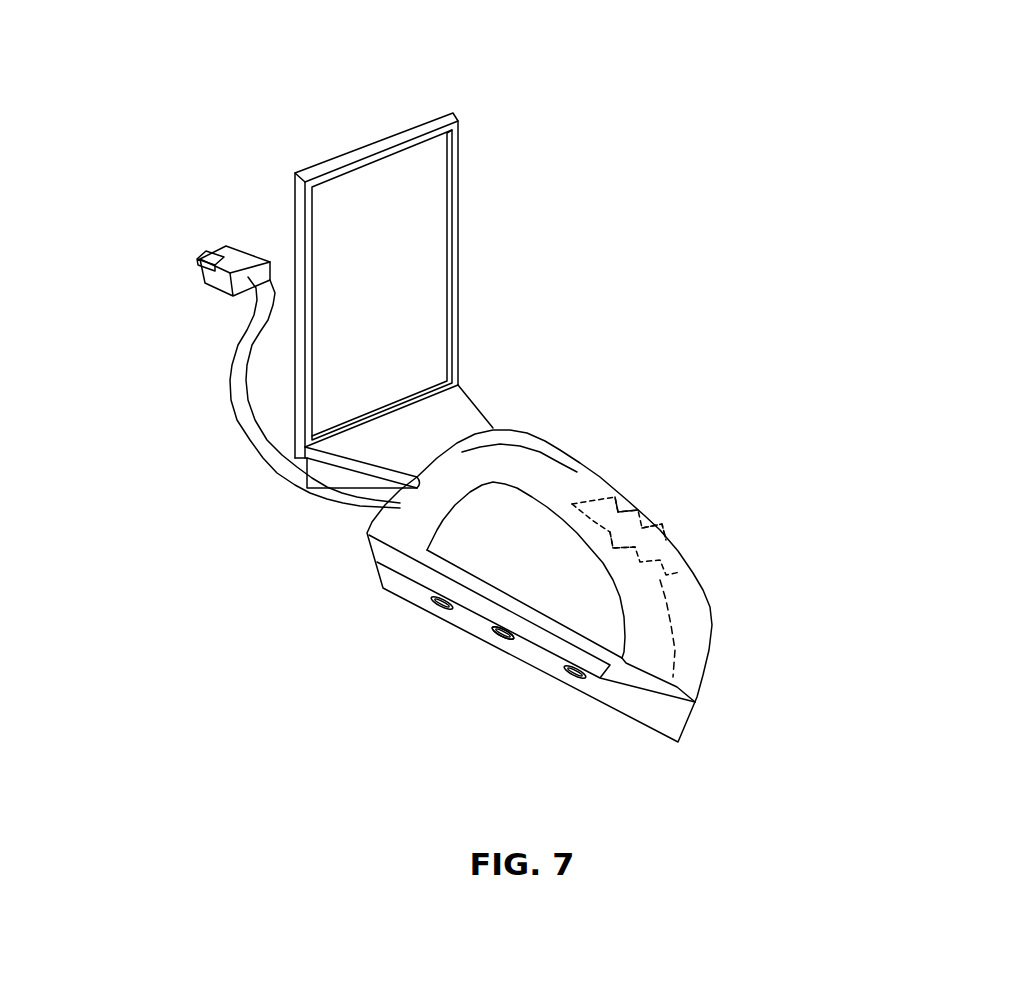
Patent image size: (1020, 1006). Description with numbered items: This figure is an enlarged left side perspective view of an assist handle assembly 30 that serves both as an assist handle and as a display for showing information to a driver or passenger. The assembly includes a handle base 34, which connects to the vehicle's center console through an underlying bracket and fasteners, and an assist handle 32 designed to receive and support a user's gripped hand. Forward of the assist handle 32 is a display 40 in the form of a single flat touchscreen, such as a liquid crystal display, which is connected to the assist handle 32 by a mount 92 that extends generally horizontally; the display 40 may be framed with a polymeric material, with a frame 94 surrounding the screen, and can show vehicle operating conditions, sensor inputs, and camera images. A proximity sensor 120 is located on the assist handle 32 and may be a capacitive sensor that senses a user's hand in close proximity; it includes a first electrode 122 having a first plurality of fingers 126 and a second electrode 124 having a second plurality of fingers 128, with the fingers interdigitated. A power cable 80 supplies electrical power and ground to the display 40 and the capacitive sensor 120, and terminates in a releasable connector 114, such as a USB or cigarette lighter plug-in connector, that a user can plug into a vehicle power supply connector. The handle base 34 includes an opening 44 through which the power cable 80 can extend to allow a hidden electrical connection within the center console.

The assist handle assembly 30 is at (543, 566).
The assist handle 32 is at (542, 433).
The handle base 34 is at (434, 608).
The display 40 is at (444, 244).
The opening 44 is at (500, 640).
The power cable 80 is at (241, 357).
The mount 92 is at (448, 422).
The display frame 94 is at (462, 192).
The releasable connector 114 is at (226, 262).
The proximity sensor 120 is at (610, 492).
The first electrode 122 is at (557, 512).
The second electrode 124 is at (637, 498).
The first plurality of fingers 126 is at (607, 545).
The second plurality of fingers 128 is at (660, 538).